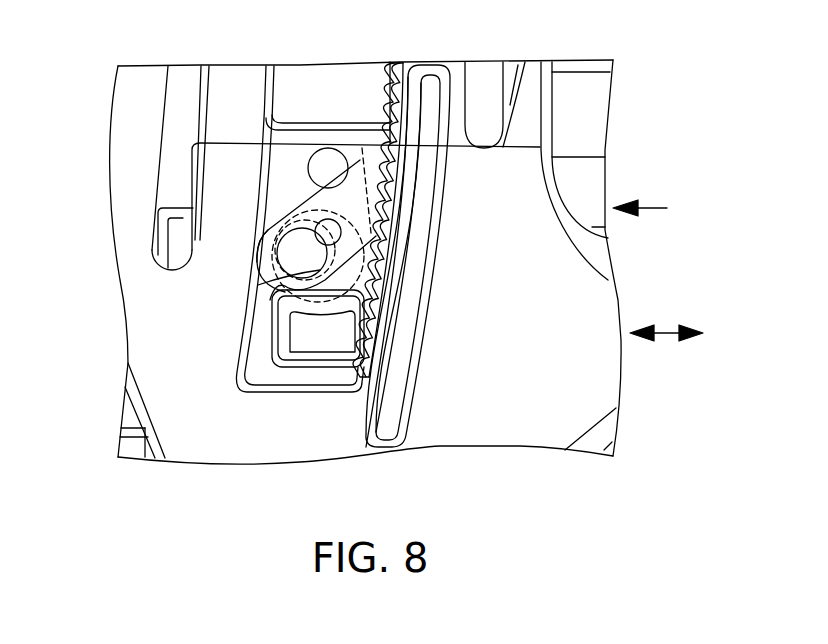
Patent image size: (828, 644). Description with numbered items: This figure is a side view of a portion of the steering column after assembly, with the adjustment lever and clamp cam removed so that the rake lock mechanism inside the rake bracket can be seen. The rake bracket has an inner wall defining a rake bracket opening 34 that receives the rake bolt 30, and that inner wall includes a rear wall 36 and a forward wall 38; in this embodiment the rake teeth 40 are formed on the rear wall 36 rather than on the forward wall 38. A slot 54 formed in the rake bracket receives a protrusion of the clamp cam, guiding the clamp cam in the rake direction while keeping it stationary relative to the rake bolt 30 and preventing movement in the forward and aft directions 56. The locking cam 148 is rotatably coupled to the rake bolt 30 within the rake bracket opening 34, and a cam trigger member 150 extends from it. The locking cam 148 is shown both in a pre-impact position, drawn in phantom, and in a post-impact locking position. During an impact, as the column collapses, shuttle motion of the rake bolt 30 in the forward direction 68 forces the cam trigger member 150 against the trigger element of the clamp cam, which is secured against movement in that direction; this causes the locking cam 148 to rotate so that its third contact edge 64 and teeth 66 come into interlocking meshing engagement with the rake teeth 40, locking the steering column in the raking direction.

The rake bolt 30 is at (278, 252).
The rake bracket opening 34 is at (330, 99).
The rear wall 36 is at (399, 68).
The forward wall 38 is at (247, 358).
The rake teeth 40 is at (402, 155).
The slot 54 is at (387, 405).
The forward and aft directions 56 is at (669, 331).
The third contact edge 64 is at (378, 170).
The teeth 66 is at (360, 160).
The forward direction 68 is at (653, 207).
The locking cam 148 is at (272, 192).
The cam trigger member 150 is at (322, 162).